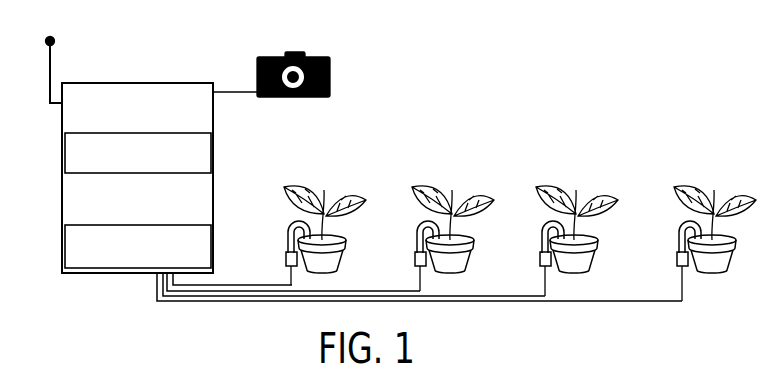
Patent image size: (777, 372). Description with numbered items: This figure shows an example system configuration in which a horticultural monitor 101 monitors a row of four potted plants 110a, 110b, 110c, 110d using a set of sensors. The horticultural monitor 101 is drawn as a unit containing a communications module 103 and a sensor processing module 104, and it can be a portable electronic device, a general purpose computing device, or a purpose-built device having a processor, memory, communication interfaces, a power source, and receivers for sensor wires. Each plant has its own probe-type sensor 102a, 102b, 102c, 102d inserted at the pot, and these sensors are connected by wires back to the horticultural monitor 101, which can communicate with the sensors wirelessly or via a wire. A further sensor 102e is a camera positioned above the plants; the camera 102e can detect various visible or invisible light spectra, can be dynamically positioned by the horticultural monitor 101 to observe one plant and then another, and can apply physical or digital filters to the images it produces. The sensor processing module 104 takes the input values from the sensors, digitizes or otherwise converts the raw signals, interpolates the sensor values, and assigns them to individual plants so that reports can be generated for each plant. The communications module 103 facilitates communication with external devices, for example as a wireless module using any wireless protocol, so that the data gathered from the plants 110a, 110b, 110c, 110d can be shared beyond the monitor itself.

The horticultural monitor 101 is at (103, 274).
The communications module 103 is at (156, 133).
The sensor processing module 104 is at (157, 225).
The sensor 102a is at (286, 229).
The sensor 102b is at (415, 229).
The sensor 102c is at (540, 229).
The sensor 102d is at (677, 229).
The camera 102e is at (278, 53).
The plant 110a is at (323, 189).
The plant 110b is at (452, 189).
The plant 110c is at (577, 189).
The plant 110d is at (714, 189).